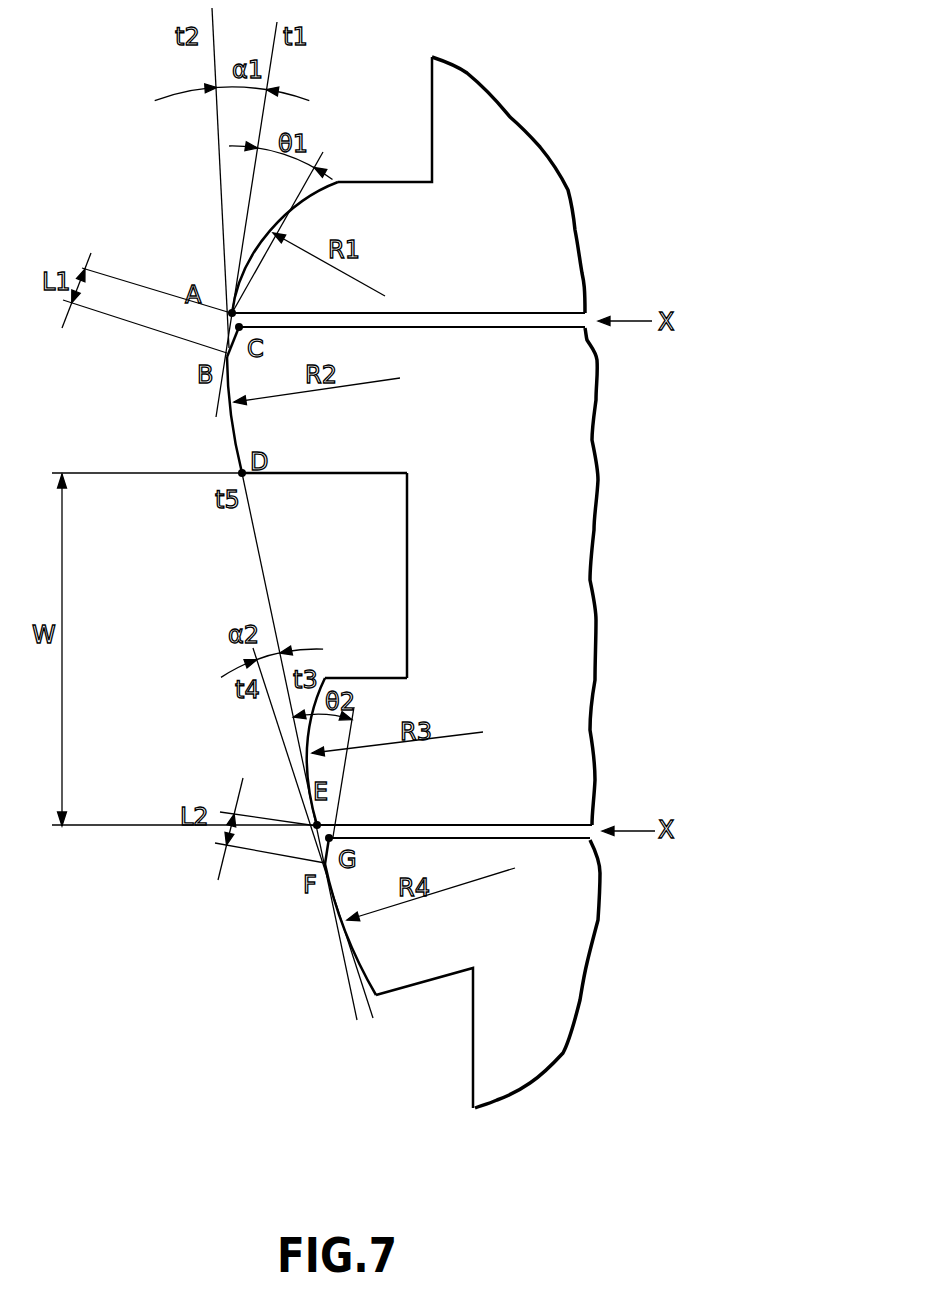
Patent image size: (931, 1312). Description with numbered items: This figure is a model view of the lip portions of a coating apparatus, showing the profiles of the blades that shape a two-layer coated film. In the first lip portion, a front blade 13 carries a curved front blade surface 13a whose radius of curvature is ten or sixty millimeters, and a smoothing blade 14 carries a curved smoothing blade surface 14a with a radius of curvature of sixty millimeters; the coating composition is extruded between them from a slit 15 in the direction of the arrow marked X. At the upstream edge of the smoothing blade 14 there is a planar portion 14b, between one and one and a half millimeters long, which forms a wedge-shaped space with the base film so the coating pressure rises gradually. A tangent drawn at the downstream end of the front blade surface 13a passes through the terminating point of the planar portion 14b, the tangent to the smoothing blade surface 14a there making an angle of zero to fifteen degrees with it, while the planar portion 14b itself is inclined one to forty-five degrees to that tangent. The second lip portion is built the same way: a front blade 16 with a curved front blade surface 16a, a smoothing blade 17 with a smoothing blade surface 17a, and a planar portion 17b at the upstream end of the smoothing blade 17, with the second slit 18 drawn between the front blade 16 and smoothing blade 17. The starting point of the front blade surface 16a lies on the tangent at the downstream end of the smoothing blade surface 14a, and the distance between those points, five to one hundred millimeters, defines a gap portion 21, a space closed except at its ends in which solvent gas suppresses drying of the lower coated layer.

The front blade 13 is at (376, 200).
The front blade surface 13a is at (268, 222).
The smoothing blade 14 is at (342, 458).
The smoothing blade surface 14a is at (232, 422).
The planar portion 14b is at (232, 336).
The slit 15 is at (533, 315).
The front blade 16 is at (373, 694).
The front blade surface 16a is at (310, 736).
The smoothing blade 17 is at (427, 968).
The smoothing blade surface 17a is at (358, 978).
The planar portion 17b is at (320, 848).
The slit between second and third blades 18 is at (540, 842).
The gap portion 21 is at (407, 550).